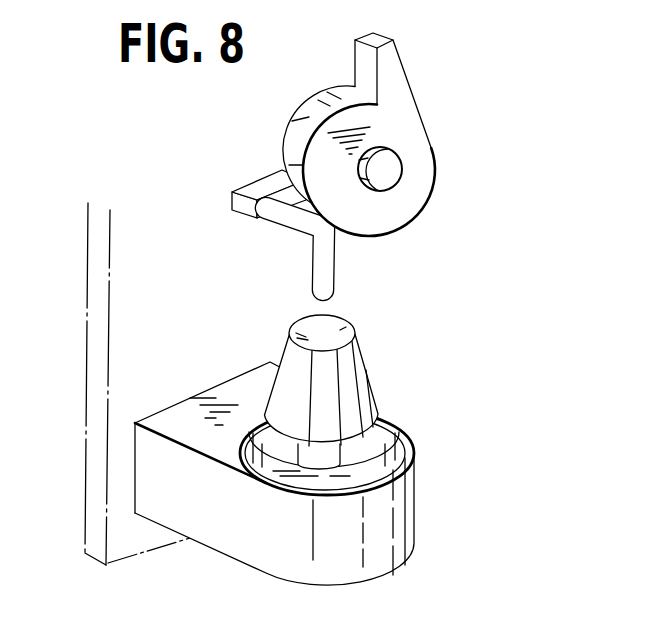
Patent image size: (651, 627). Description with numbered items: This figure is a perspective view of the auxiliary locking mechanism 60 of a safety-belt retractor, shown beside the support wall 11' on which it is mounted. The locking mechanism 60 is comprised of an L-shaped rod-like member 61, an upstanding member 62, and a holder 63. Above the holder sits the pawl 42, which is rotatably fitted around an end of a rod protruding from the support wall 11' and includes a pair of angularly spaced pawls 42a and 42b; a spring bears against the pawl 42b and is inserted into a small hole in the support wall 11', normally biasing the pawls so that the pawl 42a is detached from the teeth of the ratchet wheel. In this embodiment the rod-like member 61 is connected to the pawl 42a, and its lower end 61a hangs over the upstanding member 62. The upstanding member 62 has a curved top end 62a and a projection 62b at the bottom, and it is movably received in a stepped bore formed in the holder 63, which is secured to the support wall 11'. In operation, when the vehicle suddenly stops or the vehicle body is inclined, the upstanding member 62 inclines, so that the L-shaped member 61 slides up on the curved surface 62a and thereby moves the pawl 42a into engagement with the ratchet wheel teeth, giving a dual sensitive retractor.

The support wall 11' is at (104, 384).
The pawl 42 is at (355, 176).
The pawl 42a is at (238, 208).
The pawl 42b is at (414, 204).
The locking mechanism 60 is at (503, 248).
The L-shaped rod-like member 61 is at (326, 252).
The pin tip 61a is at (333, 300).
The upstanding member 62 is at (359, 379).
The curved top end 62a is at (313, 331).
The projection 62b is at (325, 459).
The holder 63 is at (387, 497).